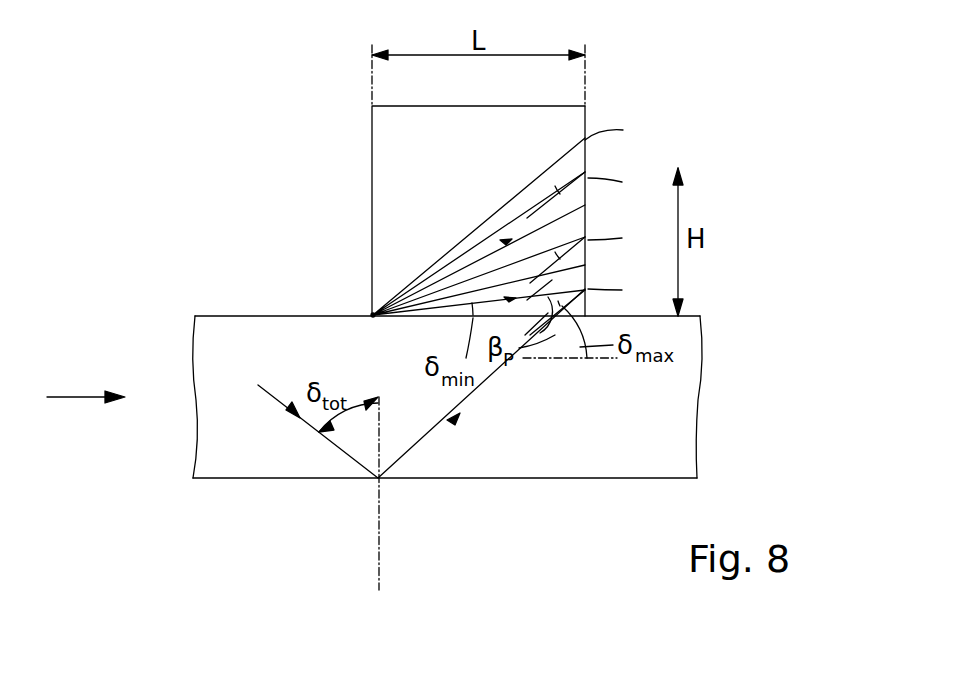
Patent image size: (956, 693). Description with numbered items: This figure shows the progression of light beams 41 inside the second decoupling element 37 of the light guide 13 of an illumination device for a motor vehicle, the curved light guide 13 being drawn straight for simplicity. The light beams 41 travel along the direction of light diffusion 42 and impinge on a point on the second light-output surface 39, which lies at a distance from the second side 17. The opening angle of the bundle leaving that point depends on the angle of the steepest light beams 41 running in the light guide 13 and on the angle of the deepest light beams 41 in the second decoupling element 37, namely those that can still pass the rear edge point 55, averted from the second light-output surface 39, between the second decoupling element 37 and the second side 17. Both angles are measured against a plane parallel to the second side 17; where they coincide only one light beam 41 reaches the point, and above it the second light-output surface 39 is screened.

The light guide 13 is at (240, 462).
The second side 17 is at (235, 316).
The second decoupling element 37 is at (392, 125).
The second light-output surface 39 is at (585, 113).
The light beams 41 is at (440, 247).
The direction of light diffusion 42 is at (70, 400).
The edge point 55 is at (372, 318).